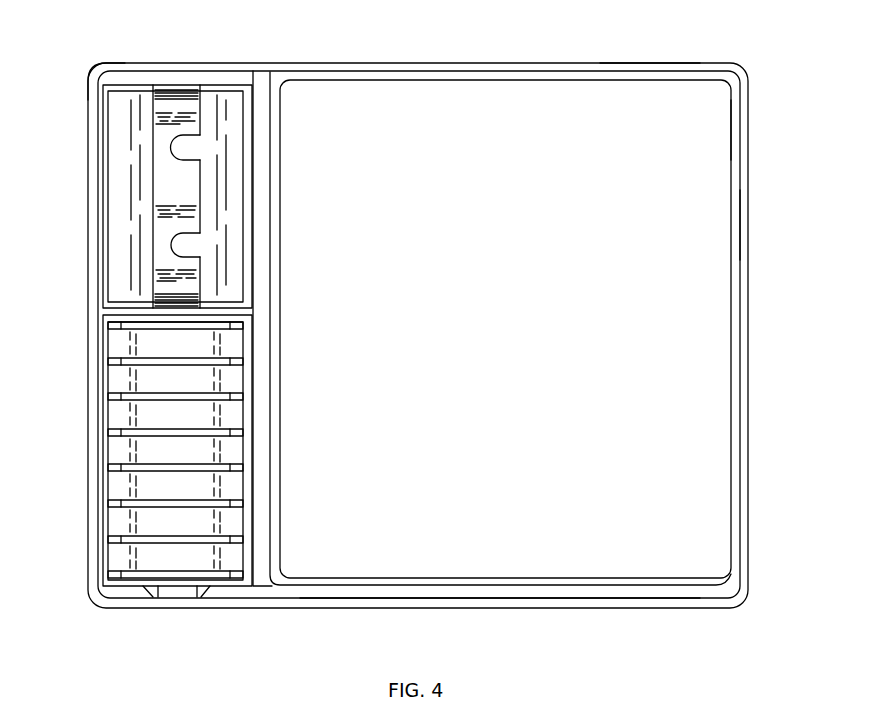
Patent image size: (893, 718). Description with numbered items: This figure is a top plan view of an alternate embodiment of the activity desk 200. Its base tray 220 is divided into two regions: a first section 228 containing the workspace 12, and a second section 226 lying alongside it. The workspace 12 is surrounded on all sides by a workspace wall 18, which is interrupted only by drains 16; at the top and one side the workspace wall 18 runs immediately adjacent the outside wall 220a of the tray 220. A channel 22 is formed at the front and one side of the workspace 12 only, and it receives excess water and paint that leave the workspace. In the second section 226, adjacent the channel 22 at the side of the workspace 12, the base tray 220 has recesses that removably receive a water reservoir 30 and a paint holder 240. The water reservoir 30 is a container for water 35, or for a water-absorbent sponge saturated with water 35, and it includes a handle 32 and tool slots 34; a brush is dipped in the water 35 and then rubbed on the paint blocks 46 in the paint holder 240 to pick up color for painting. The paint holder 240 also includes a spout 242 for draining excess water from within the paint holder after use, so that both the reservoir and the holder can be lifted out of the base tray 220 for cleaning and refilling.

The workspace 12 is at (518, 336).
The drains 16 is at (748, 578).
The workspace wall 18 is at (724, 123).
The channel 22 is at (262, 88).
The water reservoir 30 is at (106, 141).
The handle 32 is at (168, 92).
The tool slots 34 is at (190, 147).
The water 35 is at (186, 190).
The paint blocks 46 is at (118, 378).
The activity desk 200 is at (749, 328).
The base tray 220 is at (488, 63).
The outside wall 220a is at (741, 222).
The second section 226 is at (88, 66).
The first section 228 is at (645, 64).
The paint holder 240 is at (103, 452).
The spout 242 is at (176, 592).